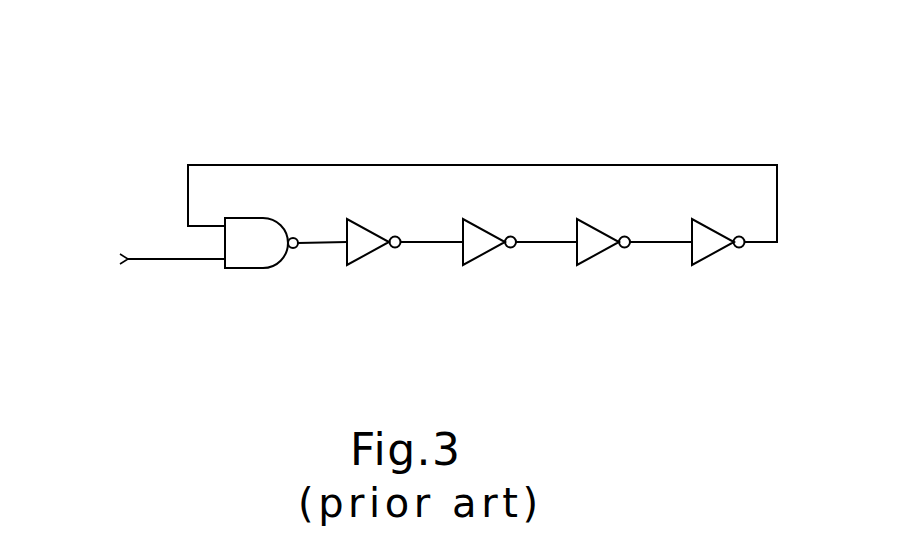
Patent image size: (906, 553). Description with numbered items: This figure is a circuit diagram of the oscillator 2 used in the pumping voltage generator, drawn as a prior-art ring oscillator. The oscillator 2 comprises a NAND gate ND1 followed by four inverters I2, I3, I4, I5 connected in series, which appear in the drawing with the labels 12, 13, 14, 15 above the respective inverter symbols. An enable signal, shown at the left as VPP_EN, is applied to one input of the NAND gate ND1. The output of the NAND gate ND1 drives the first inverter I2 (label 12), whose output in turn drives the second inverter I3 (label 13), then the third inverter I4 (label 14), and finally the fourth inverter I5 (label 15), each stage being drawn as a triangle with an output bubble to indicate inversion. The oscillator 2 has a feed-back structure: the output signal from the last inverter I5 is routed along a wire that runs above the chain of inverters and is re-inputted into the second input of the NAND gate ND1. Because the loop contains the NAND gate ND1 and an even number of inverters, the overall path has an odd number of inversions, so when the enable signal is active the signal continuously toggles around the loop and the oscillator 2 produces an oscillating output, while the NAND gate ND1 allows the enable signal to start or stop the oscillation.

The oscillator 2 is at (742, 84).
The NAND gate ND1 is at (261, 228).
The inverter I2 is at (374, 230).
The inverter I3 is at (489, 230).
The inverter I4 is at (603, 230).
The inverter I5 is at (718, 230).
The inverter 12 is at (374, 230).
The inverter 13 is at (489, 230).
The inverter 14 is at (603, 230).
The inverter 15 is at (718, 230).